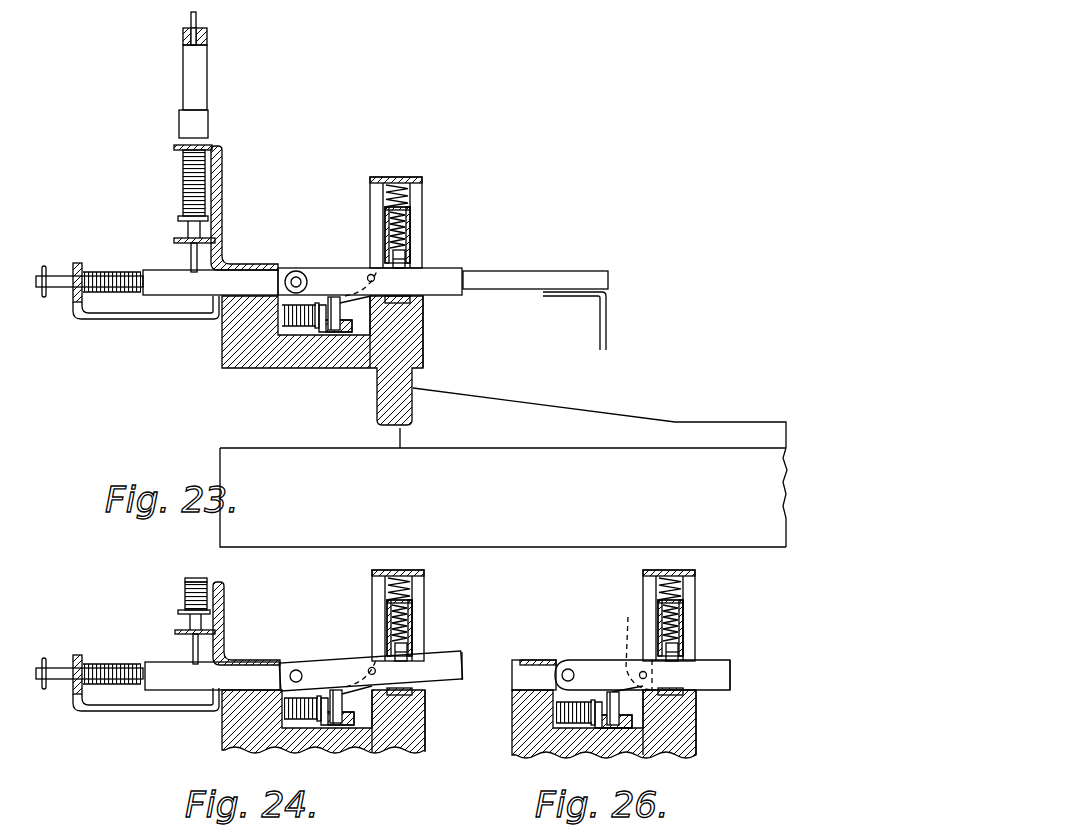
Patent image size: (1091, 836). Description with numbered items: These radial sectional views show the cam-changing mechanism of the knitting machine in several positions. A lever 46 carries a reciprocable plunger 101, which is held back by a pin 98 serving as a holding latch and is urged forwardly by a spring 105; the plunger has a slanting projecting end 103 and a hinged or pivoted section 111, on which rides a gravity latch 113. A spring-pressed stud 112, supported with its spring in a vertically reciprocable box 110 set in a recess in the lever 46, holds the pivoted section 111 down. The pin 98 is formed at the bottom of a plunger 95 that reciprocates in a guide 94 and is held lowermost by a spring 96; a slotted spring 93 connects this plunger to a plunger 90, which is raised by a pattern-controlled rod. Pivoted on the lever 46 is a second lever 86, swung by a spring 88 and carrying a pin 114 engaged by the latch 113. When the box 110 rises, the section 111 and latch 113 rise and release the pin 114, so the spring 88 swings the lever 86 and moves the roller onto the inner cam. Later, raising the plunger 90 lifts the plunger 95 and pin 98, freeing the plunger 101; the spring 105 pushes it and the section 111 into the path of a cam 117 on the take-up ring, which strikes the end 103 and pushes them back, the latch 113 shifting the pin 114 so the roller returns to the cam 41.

In FIG. 23, the plunger 90 is at (197, 16).
In FIG. 23, the spring 93 is at (207, 60).
In FIG. 23, the plunger 95 is at (205, 120).
In FIG. 24, the plunger 95 is at (191, 578).
In FIG. 23, the guide 94 is at (222, 150).
In FIG. 23, the spring 96 is at (183, 183).
In FIG. 24, the spring 96 is at (185, 588).
In FIG. 23, the pin 98 is at (191, 250).
In FIG. 24, the pin 98 is at (193, 645).
In FIG. 23, the spring 105 is at (108, 272).
In FIG. 24, the spring 105 is at (108, 664).
In FIG. 23, the plunger 101 is at (246, 289).
In FIG. 24, the plunger 101 is at (248, 681).
In FIG. 26, the plunger 101 is at (534, 660).
In FIG. 23, the pivoted section 111 is at (322, 268).
In FIG. 24, the pivoted section 111 is at (330, 662).
In FIG. 26, the pivoted section 111 is at (598, 660).
In FIG. 23, the pin 114 is at (337, 300).
In FIG. 24, the pin 114 is at (345, 708).
In FIG. 26, the pin 114 is at (619, 705).
In FIG. 23, the box 110 is at (410, 234).
In FIG. 24, the box 110 is at (412, 628).
In FIG. 26, the box 110 is at (685, 642).
In FIG. 23, the spring-pressed stud 112 is at (408, 258).
In FIG. 24, the spring-pressed stud 112 is at (410, 652).
In FIG. 26, the spring-pressed stud 112 is at (683, 665).
In FIG. 23, the cam 117 is at (532, 270).
In FIG. 23, the gravity latch 113 is at (348, 302).
In FIG. 24, the gravity latch 113 is at (350, 692).
In FIG. 26, the gravity latch 113 is at (631, 618).
In FIG. 23, the lever 46 is at (425, 357).
In FIG. 24, the lever 46 is at (426, 745).
In FIG. 26, the lever 46 is at (698, 748).
In FIG. 23, the cam 41 is at (495, 398).
In FIG. 23, the spring 88 is at (292, 335).
In FIG. 24, the spring 88 is at (302, 728).
In FIG. 26, the spring 88 is at (572, 728).
In FIG. 23, the lever 86 is at (346, 332).
In FIG. 24, the lever 86 is at (352, 728).
In FIG. 26, the lever 86 is at (628, 728).
In FIG. 24, the projecting end 103 is at (463, 668).
In FIG. 26, the projecting end 103 is at (731, 675).